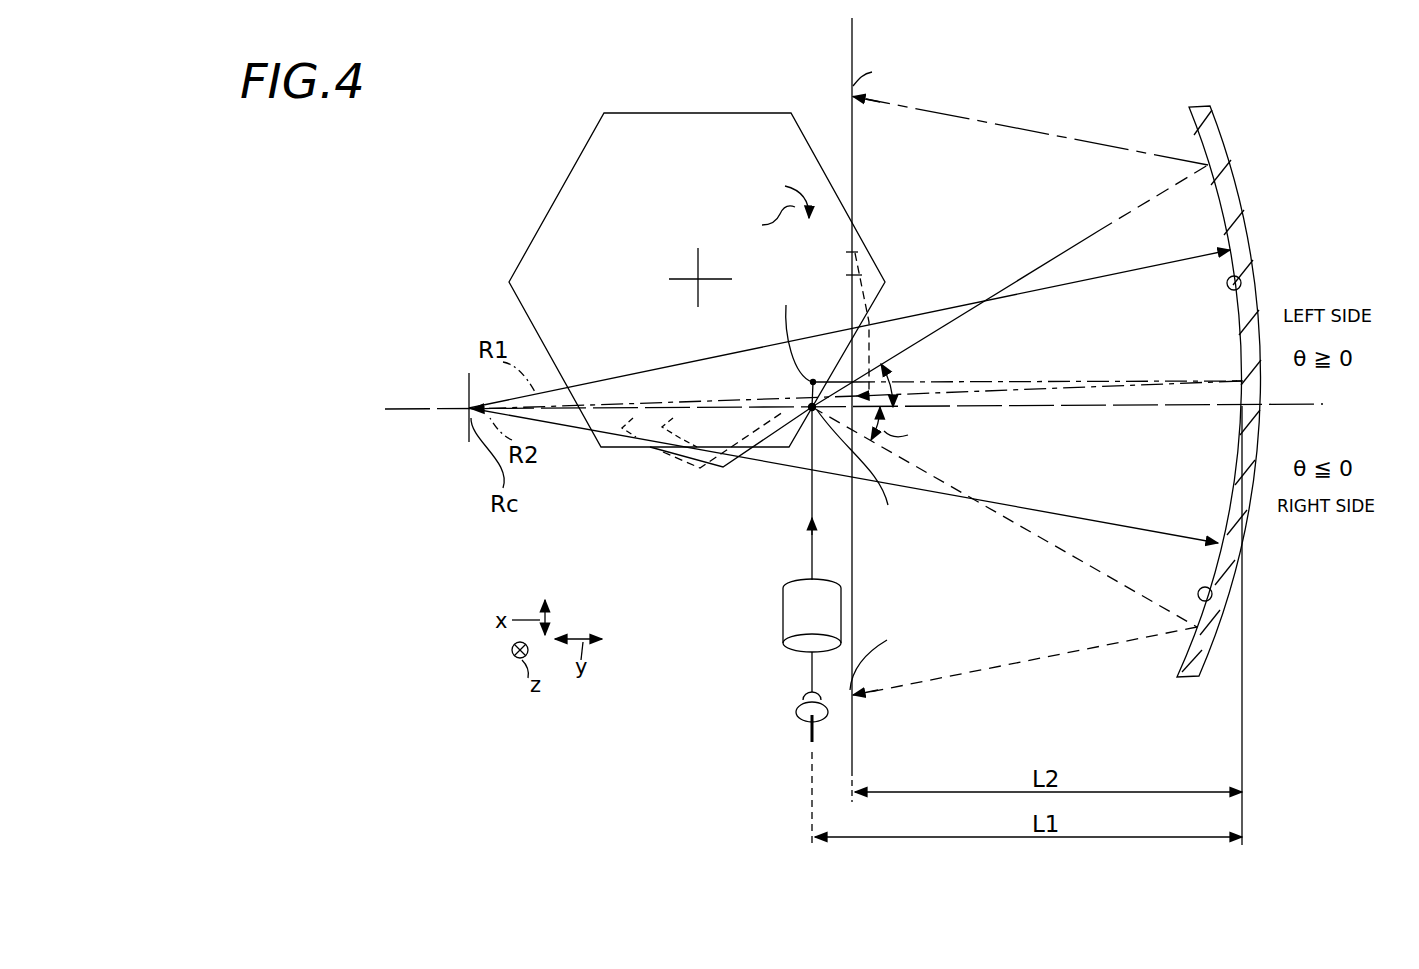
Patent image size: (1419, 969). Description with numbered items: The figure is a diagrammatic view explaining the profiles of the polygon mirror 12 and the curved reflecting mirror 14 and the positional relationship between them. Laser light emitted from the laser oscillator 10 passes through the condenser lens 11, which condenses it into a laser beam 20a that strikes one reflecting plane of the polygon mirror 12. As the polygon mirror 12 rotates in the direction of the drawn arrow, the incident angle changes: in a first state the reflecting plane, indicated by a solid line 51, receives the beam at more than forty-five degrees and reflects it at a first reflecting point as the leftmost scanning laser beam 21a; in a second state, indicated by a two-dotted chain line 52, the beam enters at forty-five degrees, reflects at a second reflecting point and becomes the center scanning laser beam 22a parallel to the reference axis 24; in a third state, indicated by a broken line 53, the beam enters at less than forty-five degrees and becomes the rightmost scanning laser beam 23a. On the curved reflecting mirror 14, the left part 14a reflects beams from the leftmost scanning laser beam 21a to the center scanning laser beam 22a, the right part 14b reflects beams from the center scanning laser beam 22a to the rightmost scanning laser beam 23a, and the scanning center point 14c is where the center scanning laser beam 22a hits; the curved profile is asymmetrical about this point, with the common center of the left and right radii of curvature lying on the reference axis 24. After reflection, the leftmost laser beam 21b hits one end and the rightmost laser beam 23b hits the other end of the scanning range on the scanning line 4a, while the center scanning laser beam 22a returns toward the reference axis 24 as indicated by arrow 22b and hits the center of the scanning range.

The scanning line 4a is at (855, 723).
The laser oscillator 10 is at (810, 718).
The condenser lens 11 is at (808, 612).
The polygon mirror 12 is at (748, 112).
The curved reflecting mirror 14 is at (1222, 98).
The left part 14a is at (1245, 278).
The right part 14b is at (1212, 596).
The scanning center point 14c is at (1240, 378).
The laser beam 20a is at (812, 497).
The leftmost scanning laser beam 21a is at (1072, 248).
The leftmost laser beam 21b is at (972, 120).
The center scanning laser beam 22a is at (1051, 380).
The reflected center scanning laser beam 22b is at (981, 390).
The rightmost scanning laser beam 23a is at (1037, 540).
The rightmost laser beam 23b is at (971, 668).
The reference axis 24 is at (405, 413).
The solid line 51 is at (884, 287).
The two-dotted chain line 52 is at (810, 384).
The broken line 53 is at (667, 455).